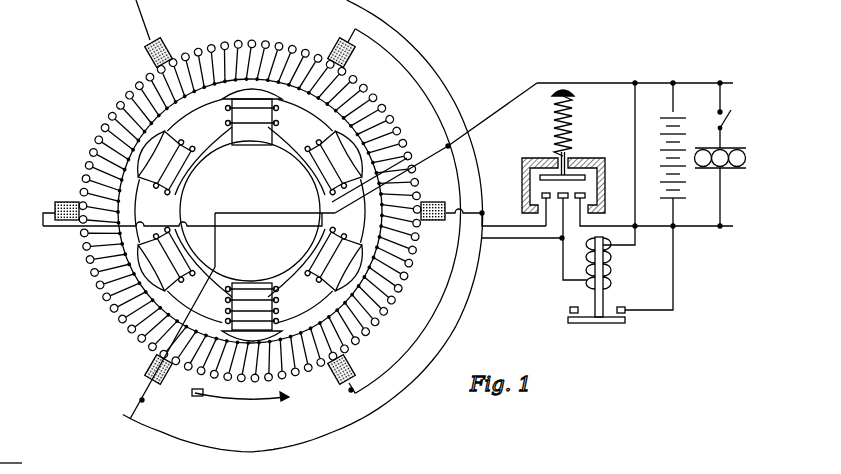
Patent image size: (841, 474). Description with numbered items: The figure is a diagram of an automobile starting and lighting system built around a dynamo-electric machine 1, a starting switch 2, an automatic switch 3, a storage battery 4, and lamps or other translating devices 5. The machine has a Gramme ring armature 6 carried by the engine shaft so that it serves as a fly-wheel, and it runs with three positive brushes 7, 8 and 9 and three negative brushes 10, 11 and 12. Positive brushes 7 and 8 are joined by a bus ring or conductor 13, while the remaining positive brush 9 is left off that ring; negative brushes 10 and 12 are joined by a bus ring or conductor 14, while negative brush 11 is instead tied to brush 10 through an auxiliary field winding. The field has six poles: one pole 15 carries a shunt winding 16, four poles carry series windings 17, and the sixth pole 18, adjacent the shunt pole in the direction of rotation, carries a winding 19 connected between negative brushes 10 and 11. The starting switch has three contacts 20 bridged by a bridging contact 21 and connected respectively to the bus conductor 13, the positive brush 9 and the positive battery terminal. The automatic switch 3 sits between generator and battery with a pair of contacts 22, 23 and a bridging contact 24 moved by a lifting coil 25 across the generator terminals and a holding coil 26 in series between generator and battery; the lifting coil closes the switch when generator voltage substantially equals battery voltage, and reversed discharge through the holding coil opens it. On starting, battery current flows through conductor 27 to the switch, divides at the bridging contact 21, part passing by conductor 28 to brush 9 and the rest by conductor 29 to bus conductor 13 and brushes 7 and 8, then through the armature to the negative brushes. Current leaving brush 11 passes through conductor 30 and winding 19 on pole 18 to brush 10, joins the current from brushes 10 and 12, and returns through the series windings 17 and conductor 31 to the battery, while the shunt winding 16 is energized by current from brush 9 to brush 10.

The dynamo-electric machine 1 is at (250, 211).
The starting switch 2 is at (563, 168).
The automatic switch 3 is at (600, 215).
The storage battery 4 is at (661, 156).
The lamps or other translating devices 5 is at (731, 170).
The Gramme ring armature 6 is at (274, 54).
The positive brush 7 is at (438, 207).
The positive brush 8 is at (168, 45).
The positive brush 9 is at (145, 381).
The negative brush 10 is at (333, 386).
The negative brush 11 is at (61, 226).
The negative brush 12 is at (346, 59).
The bus ring or conductor 13 is at (432, 39).
The bus ring or conductor 14 is at (421, 96).
The shunt wound pole 15 is at (255, 329).
The shunt winding 16 is at (228, 298).
The series windings 17 is at (276, 123).
The field pole 18 is at (358, 219).
The winding 19 is at (339, 215).
The contacts 20 is at (540, 194).
The bridging contact 21 is at (580, 173).
The contact 22 is at (568, 311).
The contact 23 is at (628, 315).
The bridging contact 24 is at (582, 324).
The lifting coil 25 is at (613, 254).
The holding coil 26 is at (613, 284).
The conductor 27 is at (600, 227).
The conductor 28 is at (540, 242).
The conductor 29 is at (497, 224).
The conductor 30 is at (200, 220).
The conductor 31 is at (575, 82).